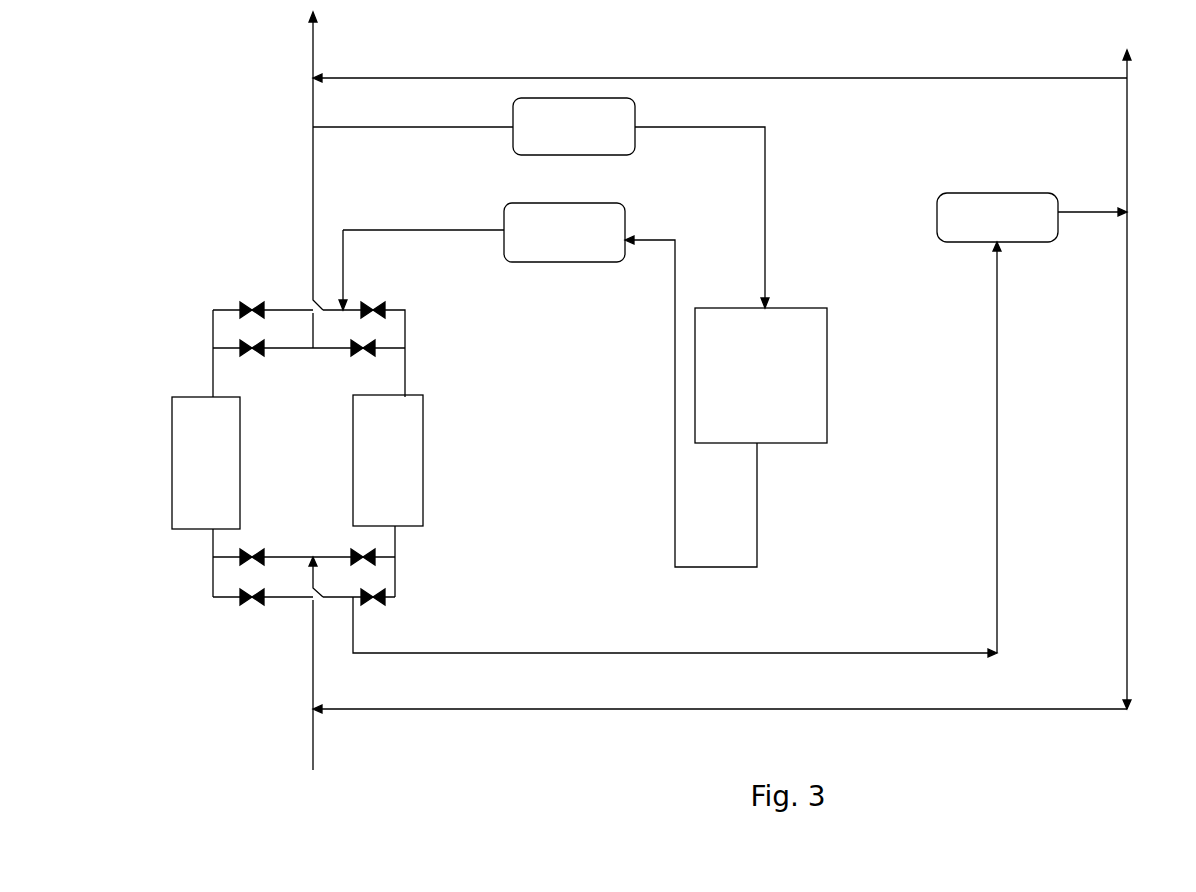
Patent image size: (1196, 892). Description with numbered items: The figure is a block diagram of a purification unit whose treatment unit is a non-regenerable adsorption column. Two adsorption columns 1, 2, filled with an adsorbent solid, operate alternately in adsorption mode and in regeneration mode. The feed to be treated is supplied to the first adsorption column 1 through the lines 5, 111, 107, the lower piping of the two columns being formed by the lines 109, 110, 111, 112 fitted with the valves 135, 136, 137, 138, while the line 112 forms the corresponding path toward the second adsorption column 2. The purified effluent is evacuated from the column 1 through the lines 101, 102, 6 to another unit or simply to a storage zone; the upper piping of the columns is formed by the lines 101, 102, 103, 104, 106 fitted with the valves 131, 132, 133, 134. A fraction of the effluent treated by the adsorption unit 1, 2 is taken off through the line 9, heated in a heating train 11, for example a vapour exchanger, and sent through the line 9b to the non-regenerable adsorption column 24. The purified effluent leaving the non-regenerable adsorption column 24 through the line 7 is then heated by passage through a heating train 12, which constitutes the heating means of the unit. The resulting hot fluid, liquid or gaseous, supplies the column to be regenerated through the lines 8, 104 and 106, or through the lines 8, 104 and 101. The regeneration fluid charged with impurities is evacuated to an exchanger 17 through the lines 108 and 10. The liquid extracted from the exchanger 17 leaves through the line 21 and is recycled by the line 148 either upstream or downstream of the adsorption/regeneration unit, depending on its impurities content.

The first adsorption column 1 is at (242, 465).
The second adsorption column 2 is at (353, 432).
The feed line 5 is at (313, 652).
The purified effluent line 6 is at (313, 212).
The line 7 is at (757, 545).
The line 8 is at (428, 230).
The line 9 is at (470, 128).
The line 9b is at (730, 125).
The line 10 is at (548, 648).
The heating train 11 is at (593, 155).
The heating train 12 is at (543, 262).
The exchanger 17 is at (978, 193).
The line 21 is at (1067, 208).
The non-regenerable adsorption column 24 is at (827, 380).
The line 101 is at (213, 353).
The line 102 is at (283, 350).
The line 103 is at (332, 350).
The line 104 is at (272, 308).
The line 106 is at (405, 378).
The line 107 is at (212, 577).
The line 108 is at (395, 567).
The line 109 is at (283, 556).
The line 110 is at (330, 556).
The line 111 is at (287, 598).
The line 112 is at (352, 600).
The valve 131 is at (238, 305).
The valve 132 is at (383, 305).
The valve 133 is at (270, 353).
The valve 134 is at (377, 340).
The valve 135 is at (240, 550).
The valve 136 is at (227, 600).
The valve 137 is at (383, 598).
The valve 138 is at (380, 555).
The recycle line 148 is at (1132, 204).